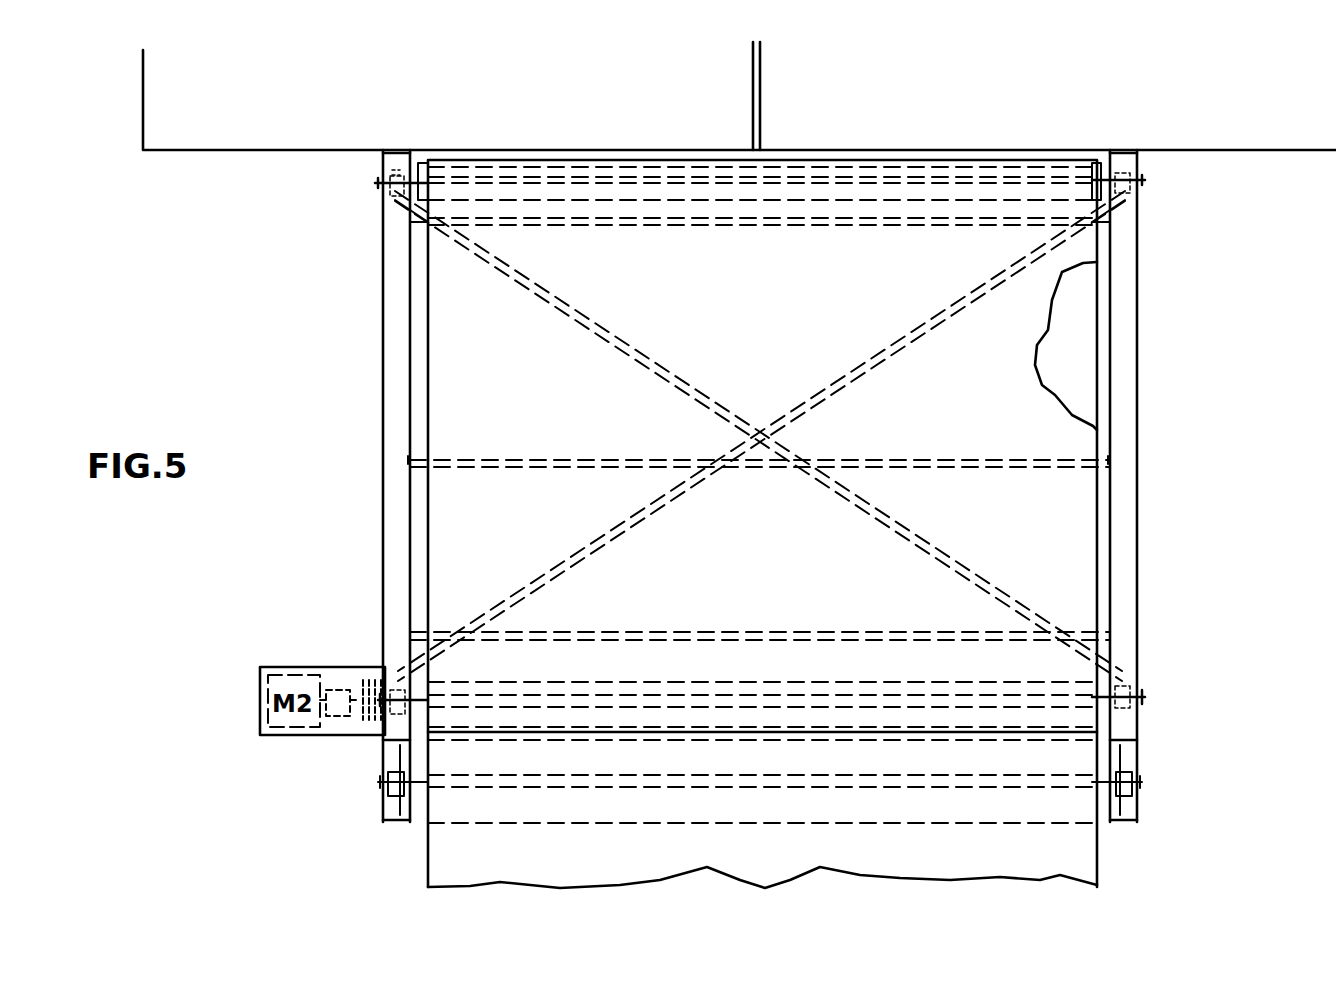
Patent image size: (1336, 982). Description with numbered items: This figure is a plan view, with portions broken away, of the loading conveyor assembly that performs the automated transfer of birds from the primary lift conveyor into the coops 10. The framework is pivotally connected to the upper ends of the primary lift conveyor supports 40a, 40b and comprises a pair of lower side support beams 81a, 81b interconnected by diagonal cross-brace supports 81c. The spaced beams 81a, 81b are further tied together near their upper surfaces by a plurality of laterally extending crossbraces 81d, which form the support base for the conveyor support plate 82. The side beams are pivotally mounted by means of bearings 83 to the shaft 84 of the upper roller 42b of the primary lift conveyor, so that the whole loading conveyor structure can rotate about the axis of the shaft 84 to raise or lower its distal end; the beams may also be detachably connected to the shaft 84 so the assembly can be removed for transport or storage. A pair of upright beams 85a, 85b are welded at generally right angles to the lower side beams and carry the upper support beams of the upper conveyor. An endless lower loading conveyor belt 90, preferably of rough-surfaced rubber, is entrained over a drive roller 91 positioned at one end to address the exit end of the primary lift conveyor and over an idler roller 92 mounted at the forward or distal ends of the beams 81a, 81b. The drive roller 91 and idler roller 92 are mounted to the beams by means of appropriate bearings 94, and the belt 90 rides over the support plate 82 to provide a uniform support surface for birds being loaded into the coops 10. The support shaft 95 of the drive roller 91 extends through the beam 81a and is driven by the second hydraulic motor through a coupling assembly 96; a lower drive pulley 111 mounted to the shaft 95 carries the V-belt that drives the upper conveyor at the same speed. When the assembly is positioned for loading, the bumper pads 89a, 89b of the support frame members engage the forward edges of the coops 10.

The coops 10 is at (280, 148).
The bumper pad 89a is at (403, 156).
The bumper pad 89b is at (1122, 156).
The bearings 94 is at (380, 180).
The idler roller 92 is at (640, 196).
The laterally extending crossbraces 81d is at (840, 226).
The diagonal cross-brace supports 81c is at (634, 346).
The lower side support beam 81a is at (395, 306).
The lower side support beam 81b is at (1124, 428).
The conveyor support plate 82 is at (1085, 372).
The lower loading conveyor belt 90 is at (749, 566).
The drive roller 91 is at (642, 686).
The support shaft 95 is at (780, 700).
The coupling assembly 96 is at (336, 688).
The lower drive pulley 111 is at (373, 680).
The upright beam 85a is at (398, 750).
The upright beam 85b is at (1140, 758).
The bearings 83 is at (386, 800).
The shaft 84 is at (586, 784).
The upper roller 42b is at (668, 822).
The primary lift conveyor support 40a is at (428, 858).
The primary lift conveyor support 40b is at (1097, 860).